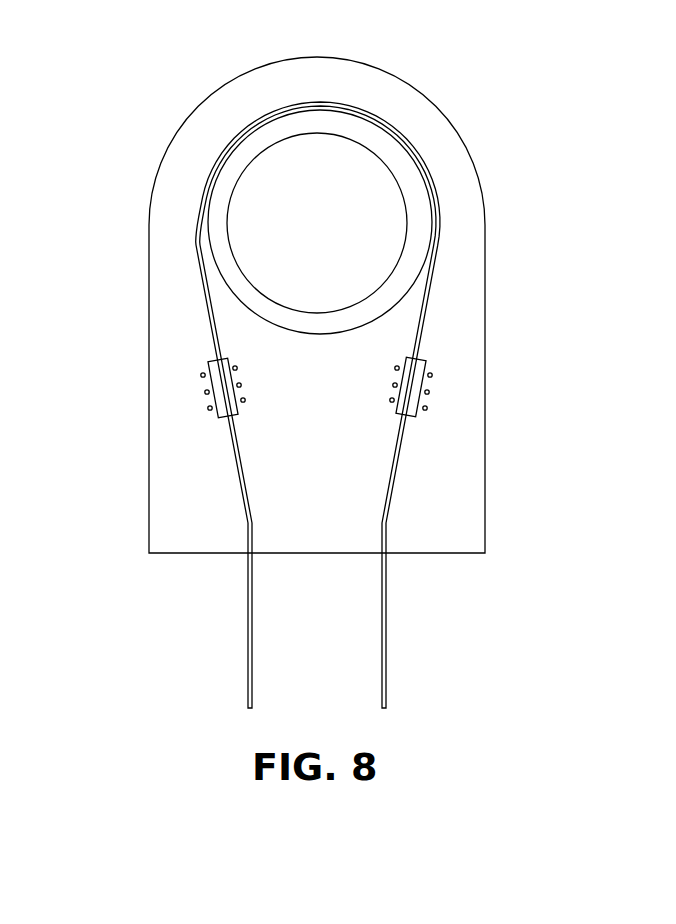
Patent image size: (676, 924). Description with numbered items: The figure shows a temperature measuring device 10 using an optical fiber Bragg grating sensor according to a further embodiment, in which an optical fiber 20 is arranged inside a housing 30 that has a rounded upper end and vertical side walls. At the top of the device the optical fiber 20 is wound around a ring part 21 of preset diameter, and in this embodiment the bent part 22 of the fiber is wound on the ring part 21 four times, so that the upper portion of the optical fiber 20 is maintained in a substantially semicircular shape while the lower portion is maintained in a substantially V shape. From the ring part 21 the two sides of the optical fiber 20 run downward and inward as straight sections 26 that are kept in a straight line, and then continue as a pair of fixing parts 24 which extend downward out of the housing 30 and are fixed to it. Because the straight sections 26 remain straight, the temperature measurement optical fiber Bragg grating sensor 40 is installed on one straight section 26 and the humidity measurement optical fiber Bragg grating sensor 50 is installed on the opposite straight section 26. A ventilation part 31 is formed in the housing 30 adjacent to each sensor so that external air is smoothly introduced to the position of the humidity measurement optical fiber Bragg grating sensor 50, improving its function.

The temperature measuring device 10 is at (178, 46).
The optical fiber 20 is at (416, 452).
The ring part 21 is at (228, 303).
The bent part 22 is at (296, 102).
The fixing parts 24 is at (380, 560).
The straight sections 26 is at (232, 427).
The housing 30 is at (149, 226).
The ventilation part 31 is at (201, 374).
The temperature measurement optical fiber Bragg grating sensor 40 is at (205, 392).
The humidity measurement optical fiber Bragg grating sensor 50 is at (432, 386).